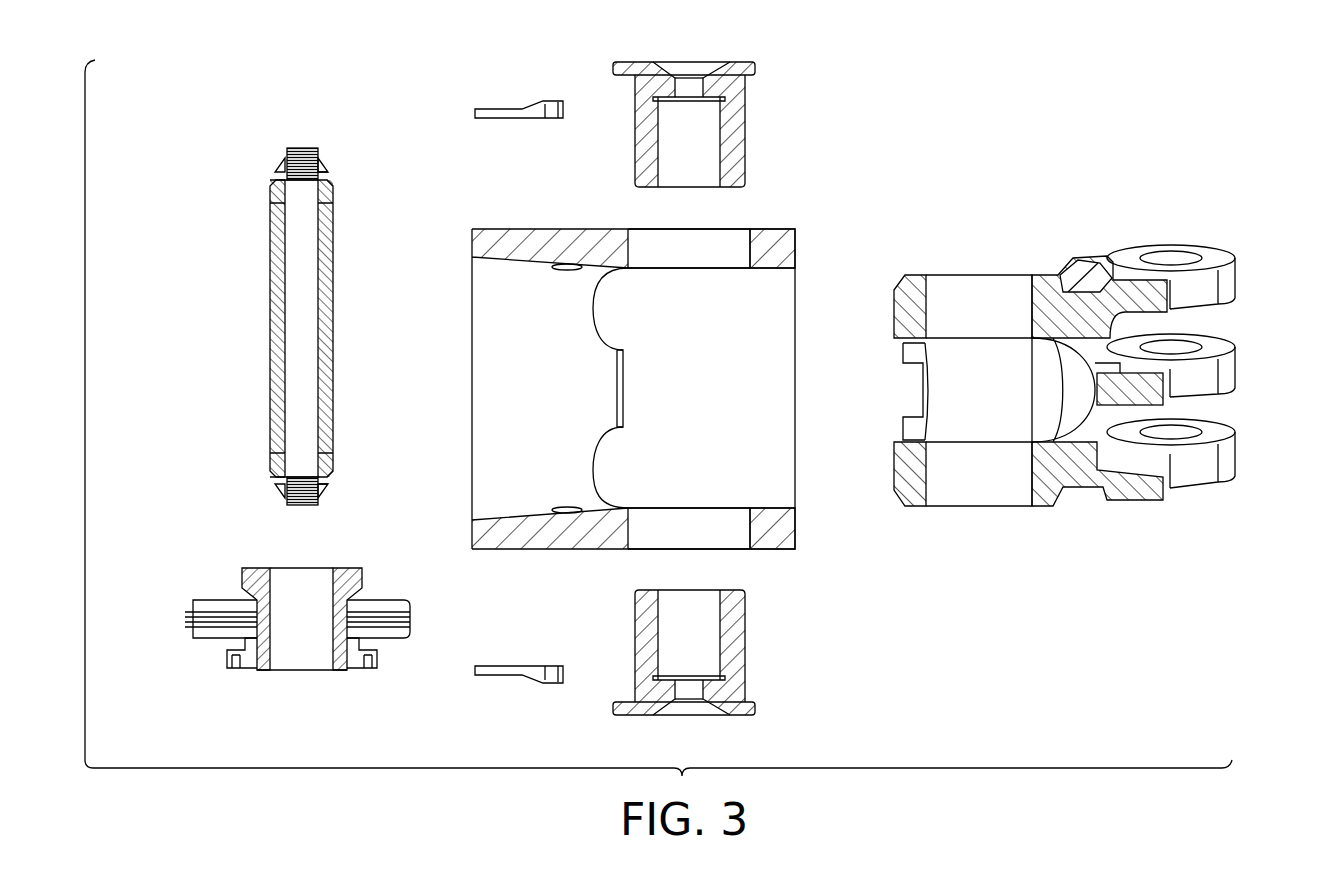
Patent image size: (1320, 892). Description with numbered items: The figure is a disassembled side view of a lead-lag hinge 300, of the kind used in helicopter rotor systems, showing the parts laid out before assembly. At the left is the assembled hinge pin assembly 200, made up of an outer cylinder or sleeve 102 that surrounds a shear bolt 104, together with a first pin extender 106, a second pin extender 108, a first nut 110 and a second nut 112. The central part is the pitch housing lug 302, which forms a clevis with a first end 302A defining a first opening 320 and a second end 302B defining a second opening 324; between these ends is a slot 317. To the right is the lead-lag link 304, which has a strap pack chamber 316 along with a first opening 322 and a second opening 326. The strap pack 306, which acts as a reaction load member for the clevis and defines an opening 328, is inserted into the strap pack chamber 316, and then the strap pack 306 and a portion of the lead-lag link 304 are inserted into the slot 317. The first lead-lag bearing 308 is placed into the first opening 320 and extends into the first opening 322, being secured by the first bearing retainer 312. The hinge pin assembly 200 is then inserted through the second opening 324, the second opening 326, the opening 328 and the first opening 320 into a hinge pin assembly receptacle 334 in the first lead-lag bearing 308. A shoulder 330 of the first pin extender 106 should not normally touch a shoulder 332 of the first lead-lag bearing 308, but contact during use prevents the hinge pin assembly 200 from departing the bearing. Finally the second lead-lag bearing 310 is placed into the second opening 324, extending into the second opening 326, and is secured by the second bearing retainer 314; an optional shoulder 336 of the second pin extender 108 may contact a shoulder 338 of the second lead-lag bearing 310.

The assembled hinge pin assembly 200 is at (195, 262).
The outer cylinder or sleeve 102 is at (334, 338).
The shear bolt 104 is at (313, 290).
The first pin extender 106 is at (272, 460).
The second pin extender 108 is at (272, 184).
The first nut 110 is at (282, 489).
The second nut 112 is at (288, 168).
The lead-lag hinge 300 is at (922, 128).
The pitch housing lug 302 is at (485, 393).
The first end 302A is at (790, 538).
The second end 302B is at (790, 247).
The lead-lag link 304 is at (1081, 388).
The strap pack 306 is at (268, 580).
The first lead-lag bearing 308 is at (555, 593).
The second lead-lag bearing 310 is at (692, 144).
The first bearing retainer 312 is at (520, 676).
The second bearing retainer 314 is at (520, 110).
The strap pack chamber 316 is at (940, 393).
The slot 317 is at (800, 270).
The first opening 320 is at (692, 510).
The first opening 322 is at (1000, 500).
The second opening 324 is at (690, 265).
The second opening 326 is at (995, 280).
The opening 328 is at (300, 658).
The shoulder 330 is at (665, 613).
The shoulder 332 is at (673, 675).
The hinge pin assembly receptacle 334 is at (665, 165).
The shoulder 336 is at (332, 178).
The shoulder 338 is at (673, 102).